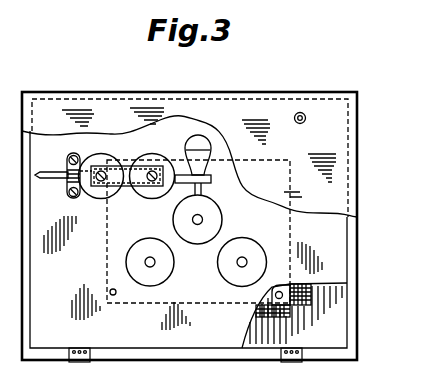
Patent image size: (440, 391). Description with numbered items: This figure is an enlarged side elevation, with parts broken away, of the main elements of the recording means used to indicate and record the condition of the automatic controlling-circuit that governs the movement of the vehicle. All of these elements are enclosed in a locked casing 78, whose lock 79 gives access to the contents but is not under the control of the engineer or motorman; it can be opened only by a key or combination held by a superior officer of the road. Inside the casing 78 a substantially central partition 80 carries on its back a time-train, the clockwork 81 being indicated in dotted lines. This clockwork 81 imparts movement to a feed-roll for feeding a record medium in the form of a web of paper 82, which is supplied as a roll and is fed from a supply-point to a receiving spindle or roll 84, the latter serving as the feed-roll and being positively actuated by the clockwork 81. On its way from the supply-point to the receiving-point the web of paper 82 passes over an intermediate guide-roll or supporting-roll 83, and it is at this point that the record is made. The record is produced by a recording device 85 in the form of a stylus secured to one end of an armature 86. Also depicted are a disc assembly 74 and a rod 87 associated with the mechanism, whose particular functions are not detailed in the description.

The disc assembly 74 is at (100, 200).
The locked casing 78 is at (358, 119).
The lock 79 is at (303, 113).
The central partition 80 is at (189, 228).
The clockwork 81 is at (288, 313).
The web of paper 82 is at (220, 234).
The guide-roll 83 is at (173, 257).
The receiving spindle 84 is at (255, 246).
The recording device 85 is at (199, 162).
The armature 86 is at (211, 178).
The rod 87 is at (42, 171).